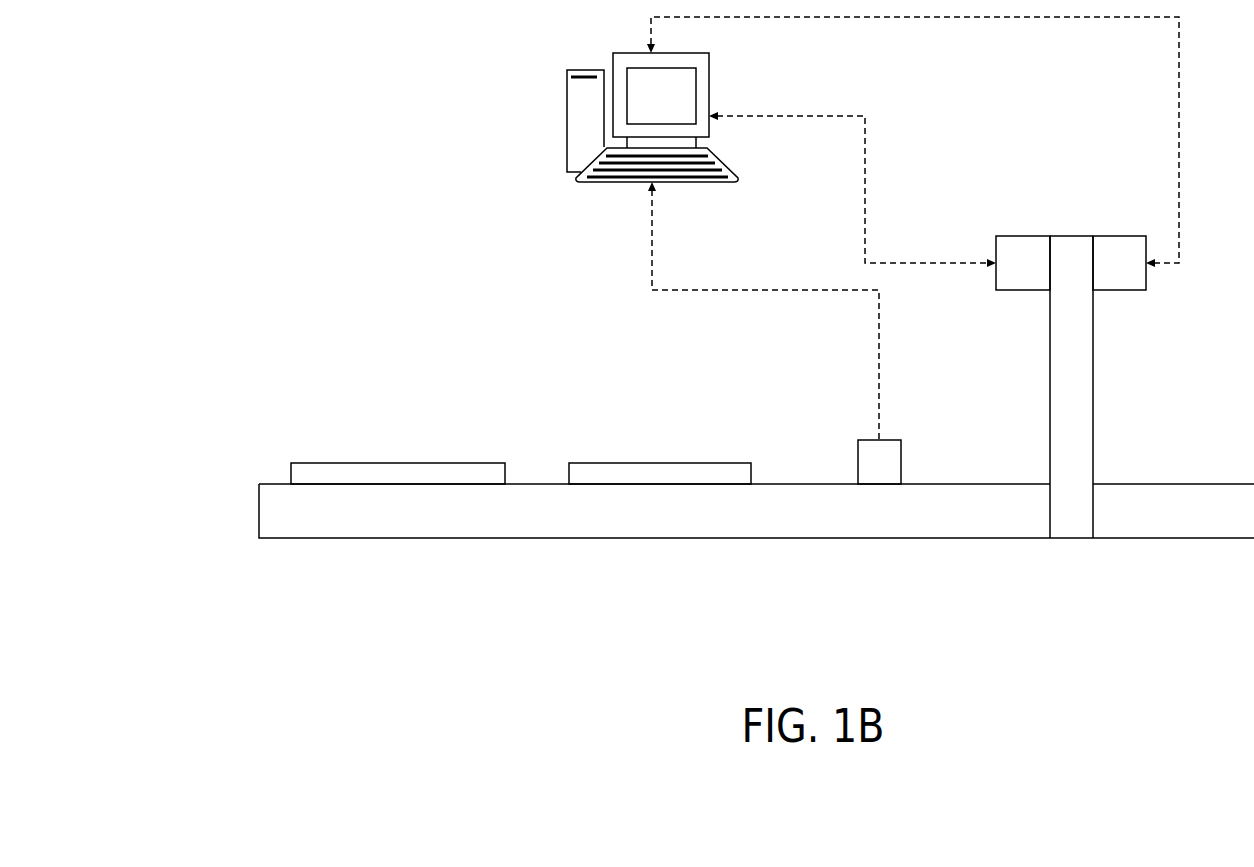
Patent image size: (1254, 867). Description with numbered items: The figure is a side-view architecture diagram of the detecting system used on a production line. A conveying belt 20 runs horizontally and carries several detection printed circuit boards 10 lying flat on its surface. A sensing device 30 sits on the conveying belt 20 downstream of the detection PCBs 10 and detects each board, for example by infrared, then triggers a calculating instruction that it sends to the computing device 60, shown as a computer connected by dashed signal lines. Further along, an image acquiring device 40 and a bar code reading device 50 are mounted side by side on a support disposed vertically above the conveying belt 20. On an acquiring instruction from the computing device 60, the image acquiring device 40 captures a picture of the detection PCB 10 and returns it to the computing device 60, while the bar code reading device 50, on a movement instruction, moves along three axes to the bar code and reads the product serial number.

The detection printed circuit board 10 is at (387, 474).
The conveying belt 20 is at (271, 518).
The sensing device 30 is at (869, 463).
The image acquiring device 40 is at (1028, 257).
The bar code reading device 50 is at (1124, 257).
The computing device 60 is at (640, 110).